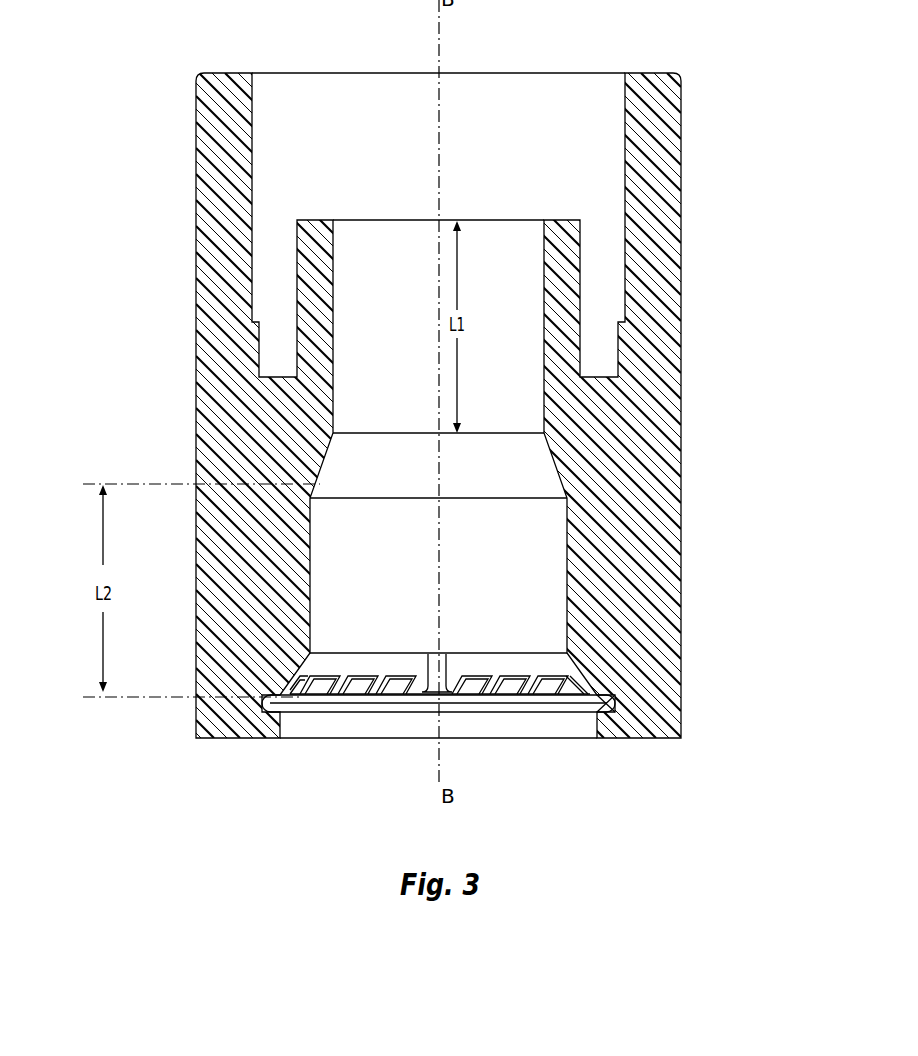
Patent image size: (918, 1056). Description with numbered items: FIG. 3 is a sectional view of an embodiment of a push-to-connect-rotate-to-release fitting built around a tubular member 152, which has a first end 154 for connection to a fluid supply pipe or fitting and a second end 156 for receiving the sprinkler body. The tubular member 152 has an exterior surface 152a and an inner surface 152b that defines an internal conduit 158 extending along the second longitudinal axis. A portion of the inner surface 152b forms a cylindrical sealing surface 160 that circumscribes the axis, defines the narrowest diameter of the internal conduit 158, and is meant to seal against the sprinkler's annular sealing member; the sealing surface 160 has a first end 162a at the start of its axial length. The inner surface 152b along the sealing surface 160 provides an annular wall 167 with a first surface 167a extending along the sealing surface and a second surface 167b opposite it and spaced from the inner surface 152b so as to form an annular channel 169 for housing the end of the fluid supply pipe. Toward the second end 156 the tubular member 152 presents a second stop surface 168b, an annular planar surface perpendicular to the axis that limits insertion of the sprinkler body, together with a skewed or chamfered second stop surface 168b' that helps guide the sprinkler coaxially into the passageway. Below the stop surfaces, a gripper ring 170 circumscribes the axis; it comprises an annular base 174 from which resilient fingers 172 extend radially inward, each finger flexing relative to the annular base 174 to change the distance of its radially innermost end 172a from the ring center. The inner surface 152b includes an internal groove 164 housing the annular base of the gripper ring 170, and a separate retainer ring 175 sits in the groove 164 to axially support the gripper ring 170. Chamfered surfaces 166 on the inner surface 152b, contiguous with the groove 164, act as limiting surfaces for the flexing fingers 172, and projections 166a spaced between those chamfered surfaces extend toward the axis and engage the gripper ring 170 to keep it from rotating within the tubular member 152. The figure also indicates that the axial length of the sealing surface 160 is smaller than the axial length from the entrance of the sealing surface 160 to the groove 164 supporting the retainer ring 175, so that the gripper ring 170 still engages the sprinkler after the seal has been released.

The tubular member 152 is at (662, 398).
The exterior surface 152a is at (196, 237).
The inner surface 152b is at (626, 130).
The first end 154 is at (203, 137).
The second end 156 is at (212, 742).
The internal conduit 158 is at (378, 145).
The sealing surface 160 is at (333, 413).
The first end of the sealing surface 162a is at (333, 305).
The internal groove 164 is at (616, 704).
The chamfered surface 166 is at (470, 673).
The projection 166a is at (431, 655).
The annular wall 167 is at (568, 220).
The first surface of the annular wall 167a is at (545, 368).
The second surface of the annular wall 167b is at (581, 289).
The second stop surface 168b is at (353, 503).
The chamfered second stop surface 168b' is at (222, 451).
The annular channel 169 is at (603, 345).
The gripper ring 170 is at (353, 694).
The fingers 172 is at (515, 673).
The radially innermost end of the finger 172a is at (377, 673).
The annular base 174 is at (588, 692).
The retainer ring 175 is at (592, 713).